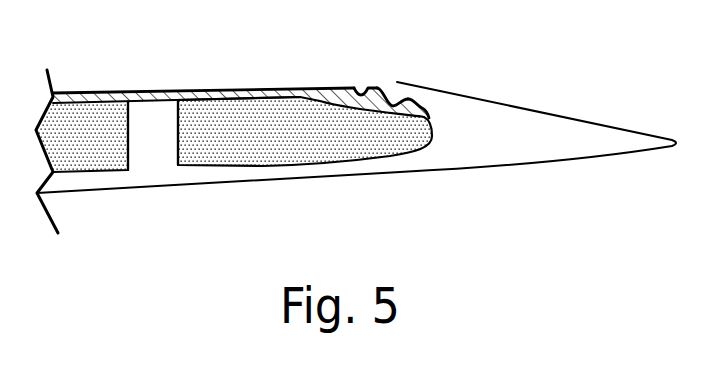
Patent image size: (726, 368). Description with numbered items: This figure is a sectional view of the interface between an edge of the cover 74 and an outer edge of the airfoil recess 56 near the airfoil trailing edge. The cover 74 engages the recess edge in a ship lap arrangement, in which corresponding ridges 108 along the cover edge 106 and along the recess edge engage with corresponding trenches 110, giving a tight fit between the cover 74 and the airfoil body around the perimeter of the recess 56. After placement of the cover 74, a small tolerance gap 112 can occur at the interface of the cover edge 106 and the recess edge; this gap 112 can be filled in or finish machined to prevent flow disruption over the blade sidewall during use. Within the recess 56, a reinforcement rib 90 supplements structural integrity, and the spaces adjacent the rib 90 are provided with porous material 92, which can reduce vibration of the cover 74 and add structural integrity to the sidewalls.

The cover 74 is at (228, 86).
The porous material 92 is at (257, 142).
The reinforcement rib 90 is at (152, 152).
The recess 56 is at (443, 145).
The cover edge 106 is at (411, 65).
The ridge 108 is at (424, 103).
The trench 110 is at (400, 105).
The tolerance gap 112 is at (362, 91).